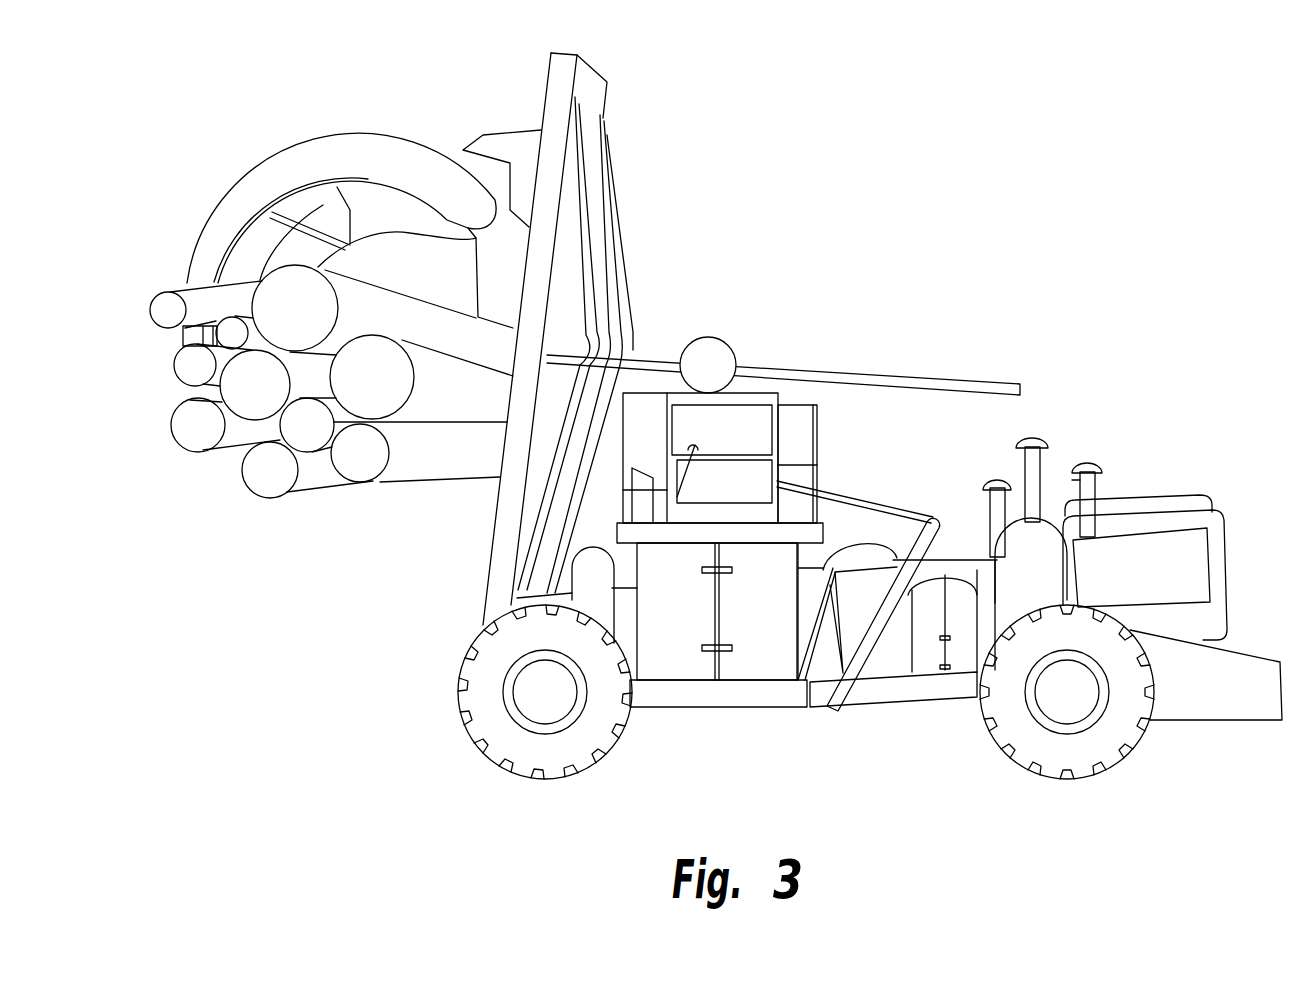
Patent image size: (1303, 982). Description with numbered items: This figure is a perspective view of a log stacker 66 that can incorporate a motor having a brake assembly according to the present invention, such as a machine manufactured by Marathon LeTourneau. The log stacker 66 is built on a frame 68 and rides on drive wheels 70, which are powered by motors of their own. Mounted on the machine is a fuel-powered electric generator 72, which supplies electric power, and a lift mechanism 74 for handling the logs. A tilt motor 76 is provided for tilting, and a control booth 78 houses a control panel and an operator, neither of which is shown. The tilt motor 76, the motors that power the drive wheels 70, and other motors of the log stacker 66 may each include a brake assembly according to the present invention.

The log stacker 66 is at (843, 212).
The frame 68 is at (893, 730).
The drive wheels 70 is at (465, 718).
The fuel-powered electric generator 72 is at (1168, 435).
The lift mechanism 74 is at (465, 107).
The tilt motor 76 is at (712, 336).
The control booth 78 is at (838, 427).